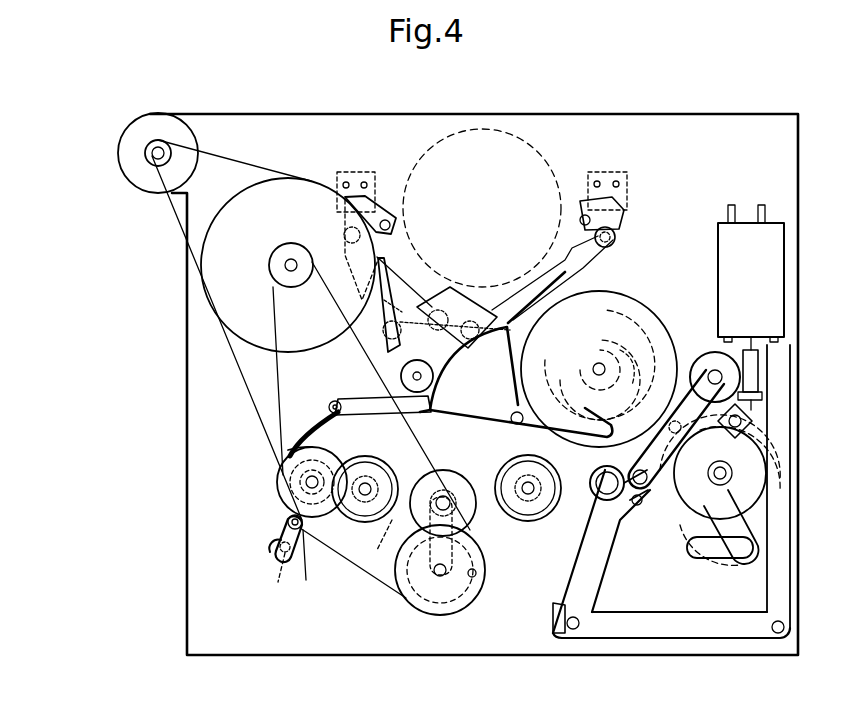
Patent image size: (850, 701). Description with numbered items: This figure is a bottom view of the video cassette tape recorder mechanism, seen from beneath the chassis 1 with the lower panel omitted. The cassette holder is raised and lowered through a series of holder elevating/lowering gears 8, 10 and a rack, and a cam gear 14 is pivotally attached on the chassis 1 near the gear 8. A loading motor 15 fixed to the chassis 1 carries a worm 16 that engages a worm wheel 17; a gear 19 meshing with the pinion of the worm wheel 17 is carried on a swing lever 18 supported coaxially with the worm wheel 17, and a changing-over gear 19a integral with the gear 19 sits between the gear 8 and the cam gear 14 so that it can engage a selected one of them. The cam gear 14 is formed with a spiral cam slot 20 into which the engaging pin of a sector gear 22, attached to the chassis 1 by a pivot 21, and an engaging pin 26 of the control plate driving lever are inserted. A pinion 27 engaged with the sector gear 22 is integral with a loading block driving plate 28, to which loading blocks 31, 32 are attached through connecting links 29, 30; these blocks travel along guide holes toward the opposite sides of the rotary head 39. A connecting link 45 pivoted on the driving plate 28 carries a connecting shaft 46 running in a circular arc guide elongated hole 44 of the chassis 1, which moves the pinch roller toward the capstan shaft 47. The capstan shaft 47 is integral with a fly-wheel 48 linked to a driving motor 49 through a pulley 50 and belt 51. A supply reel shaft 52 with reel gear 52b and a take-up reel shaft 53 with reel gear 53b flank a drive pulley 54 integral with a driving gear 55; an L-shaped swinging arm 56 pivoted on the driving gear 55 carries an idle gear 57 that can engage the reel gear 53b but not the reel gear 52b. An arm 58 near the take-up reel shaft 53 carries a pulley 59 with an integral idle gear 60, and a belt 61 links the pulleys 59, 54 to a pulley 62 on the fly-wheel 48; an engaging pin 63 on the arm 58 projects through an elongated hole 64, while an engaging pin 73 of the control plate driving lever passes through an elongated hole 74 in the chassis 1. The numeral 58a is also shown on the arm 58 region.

The chassis 1 is at (799, 150).
The holder elevating/lowering gear 8 is at (760, 522).
The holder elevating/lowering gear 10 is at (752, 428).
The cam gear 14 is at (624, 300).
The loading motor 15 is at (774, 244).
The worm 16 is at (764, 362).
The worm wheel 17 is at (764, 388).
The swing lever 18 is at (706, 364).
The gear 19 is at (766, 464).
The changing-over gear 19a is at (752, 492).
The spiral cam slot 20 is at (600, 365).
The pivot 21 is at (514, 426).
The sector gear 22 is at (468, 419).
The engaging pin 26 is at (648, 318).
The pinion 27 is at (435, 382).
The loading block driving plate 28 is at (464, 300).
The connecting link 29 is at (548, 266).
The connecting link 30 is at (402, 278).
The loading block 31 is at (620, 236).
The loading block 32 is at (389, 212).
The rotary head 39 is at (476, 128).
The circular arc guide elongated hole 44 is at (312, 430).
The connecting link 45 is at (380, 412).
The connecting shaft 46 is at (335, 400).
The capstan shaft 47 is at (274, 262).
The fly-wheel 48 is at (244, 204).
The driving motor 49 is at (152, 154).
The pulley 50 is at (160, 135).
The belt 51 is at (183, 228).
The supply reel shaft 52 is at (510, 512).
The reel gear 52b is at (540, 516).
The take-up reel shaft 53 is at (364, 496).
The reel gear 53b is at (343, 524).
The drive pulley 54 is at (441, 609).
The driving gear 55 is at (468, 602).
The L-shaped swinging arm 56 is at (382, 538).
The idle gear 57 is at (460, 486).
The arm 58 is at (286, 520).
The tension arm pin 58a is at (315, 567).
The pulley 59 is at (286, 454).
The idle gear 60 is at (300, 478).
The belt 61 is at (274, 310).
The pulley 62 is at (291, 258).
The engaging pin 63 is at (271, 569).
The elongated hole 64 is at (270, 544).
The engaging pin 73 is at (780, 558).
The elongated hole 74 is at (720, 560).